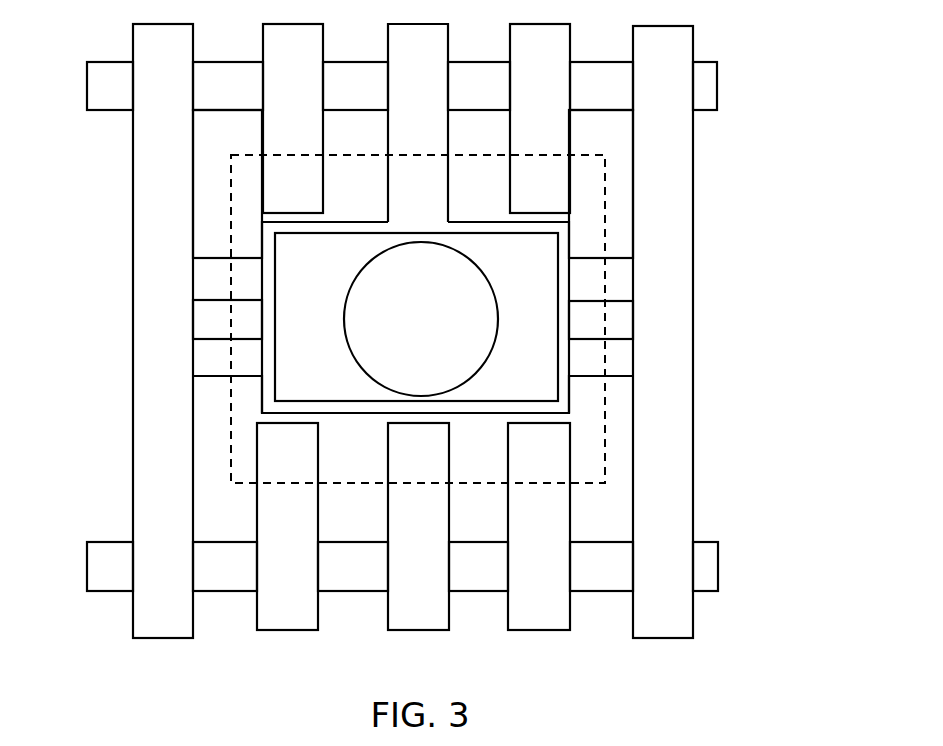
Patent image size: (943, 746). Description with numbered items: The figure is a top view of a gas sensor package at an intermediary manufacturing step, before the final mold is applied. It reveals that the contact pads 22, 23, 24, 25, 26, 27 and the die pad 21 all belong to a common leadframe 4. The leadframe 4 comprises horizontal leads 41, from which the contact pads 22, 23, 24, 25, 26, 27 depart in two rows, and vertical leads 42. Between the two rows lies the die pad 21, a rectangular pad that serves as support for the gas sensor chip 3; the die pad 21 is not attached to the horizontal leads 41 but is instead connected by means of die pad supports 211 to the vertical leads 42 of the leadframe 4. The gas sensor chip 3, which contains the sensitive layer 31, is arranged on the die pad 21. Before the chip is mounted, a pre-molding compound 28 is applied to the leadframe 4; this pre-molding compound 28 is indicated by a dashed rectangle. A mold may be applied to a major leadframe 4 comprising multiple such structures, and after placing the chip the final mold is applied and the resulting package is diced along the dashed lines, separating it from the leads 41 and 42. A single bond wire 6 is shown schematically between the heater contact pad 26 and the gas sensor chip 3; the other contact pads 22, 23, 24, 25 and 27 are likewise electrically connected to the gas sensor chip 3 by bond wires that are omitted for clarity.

The gas sensor chip 3 is at (416, 317).
The sensitive layer 31 is at (437, 328).
The leadframe 4 is at (250, 628).
The horizontal leads 41 is at (500, 568).
The vertical leads 42 is at (157, 455).
The bond wire 6 is at (352, 398).
The die pad 21 is at (473, 222).
The die pad supports 211 is at (217, 278).
The contact pad 22 is at (293, 118).
The contact pad 23 is at (418, 123).
The contact pad 24 is at (540, 118).
The contact pad 25 is at (287, 526).
The heater contact pad 26 is at (323, 372).
The contact pad 27 is at (539, 526).
The pre-molding compound 28 is at (607, 182).